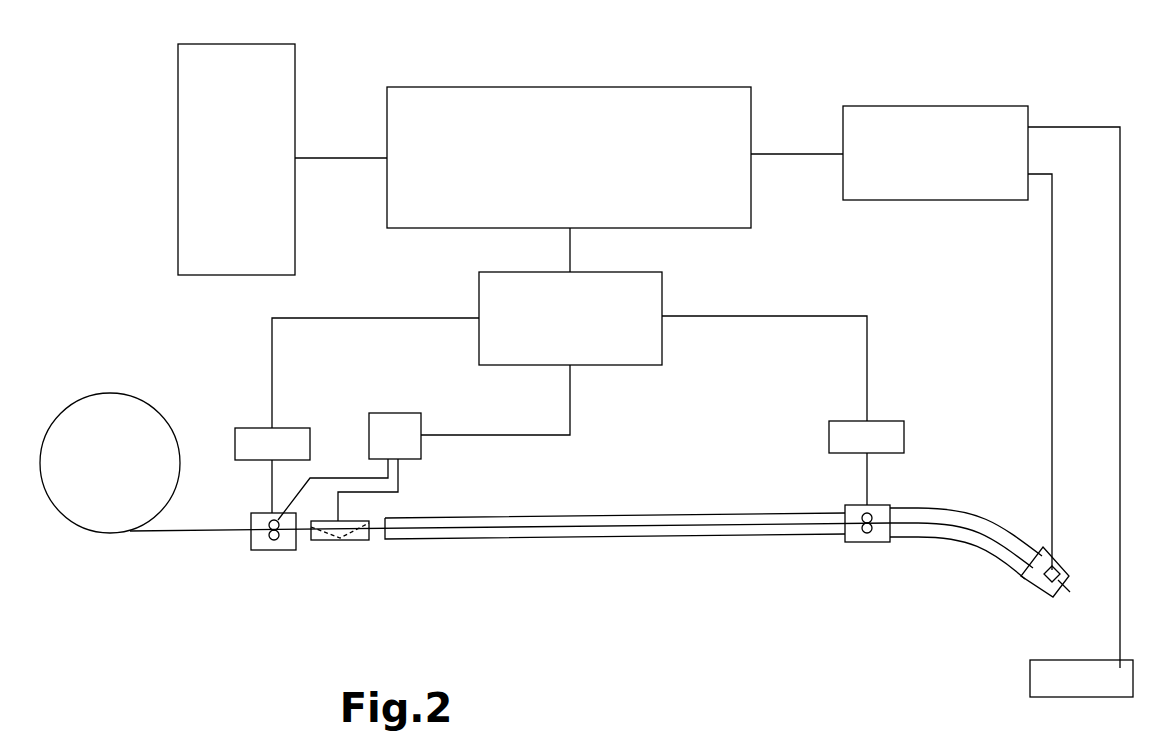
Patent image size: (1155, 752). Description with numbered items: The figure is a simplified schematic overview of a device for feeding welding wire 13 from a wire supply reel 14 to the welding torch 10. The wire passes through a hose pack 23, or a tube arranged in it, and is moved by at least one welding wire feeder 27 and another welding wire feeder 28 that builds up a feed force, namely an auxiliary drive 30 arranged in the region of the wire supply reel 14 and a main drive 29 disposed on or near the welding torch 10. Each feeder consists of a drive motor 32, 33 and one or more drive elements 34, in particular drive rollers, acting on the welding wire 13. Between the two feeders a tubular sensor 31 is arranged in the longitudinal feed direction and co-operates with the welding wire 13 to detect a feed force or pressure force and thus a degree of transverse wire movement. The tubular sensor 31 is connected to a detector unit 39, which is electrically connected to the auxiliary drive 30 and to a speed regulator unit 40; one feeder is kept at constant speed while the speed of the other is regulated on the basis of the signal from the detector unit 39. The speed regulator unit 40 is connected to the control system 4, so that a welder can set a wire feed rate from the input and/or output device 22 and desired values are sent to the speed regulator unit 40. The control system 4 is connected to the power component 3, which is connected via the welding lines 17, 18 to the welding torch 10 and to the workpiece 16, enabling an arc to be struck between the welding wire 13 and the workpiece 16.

The power component 3 is at (953, 130).
The control system 4 is at (550, 110).
The welding torch 10 is at (962, 560).
The welding wire 13 is at (197, 533).
The wire supply reel 14 is at (100, 508).
The workpiece 16 is at (1045, 683).
The welding line 17 is at (1048, 275).
The welding line 18 is at (1116, 356).
The input and/or output device 22 is at (202, 94).
The hose pack 23 is at (547, 530).
The welding wire feeder 27 is at (304, 591).
The other welding wire feeder 28 is at (805, 550).
The main drive 29 is at (855, 515).
The auxiliary drive 30 is at (287, 543).
The tubular sensor 31 is at (352, 552).
The drive motor 32 is at (250, 437).
The drive motor 33 is at (880, 435).
The drive element 34 is at (270, 522).
The detector unit 39 is at (390, 432).
The speed regulator unit 40 is at (597, 333).